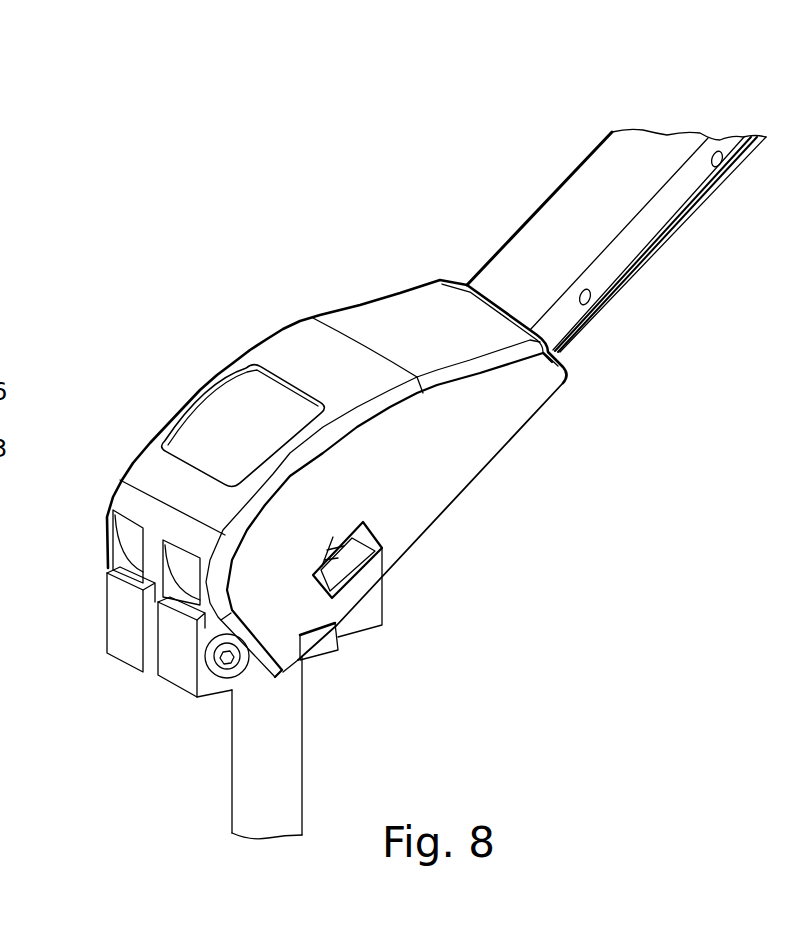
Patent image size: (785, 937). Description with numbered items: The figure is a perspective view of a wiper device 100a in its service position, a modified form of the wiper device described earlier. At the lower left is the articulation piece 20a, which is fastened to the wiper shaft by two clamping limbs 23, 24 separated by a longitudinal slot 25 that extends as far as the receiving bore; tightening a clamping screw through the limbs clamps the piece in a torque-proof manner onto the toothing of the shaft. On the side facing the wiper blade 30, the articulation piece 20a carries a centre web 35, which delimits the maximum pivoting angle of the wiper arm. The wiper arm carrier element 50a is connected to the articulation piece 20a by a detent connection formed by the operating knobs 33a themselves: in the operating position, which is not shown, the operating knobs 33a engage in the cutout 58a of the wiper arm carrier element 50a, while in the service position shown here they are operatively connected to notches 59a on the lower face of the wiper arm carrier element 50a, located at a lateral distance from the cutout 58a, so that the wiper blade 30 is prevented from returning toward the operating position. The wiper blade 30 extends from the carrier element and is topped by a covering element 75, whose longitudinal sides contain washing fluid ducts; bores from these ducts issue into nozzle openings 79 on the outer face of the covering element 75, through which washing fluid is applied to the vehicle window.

The wiper blade 30 is at (588, 131).
The covering element 75 is at (527, 247).
The nozzle openings 79 is at (722, 166).
The wiper arm carrier element 50a is at (304, 314).
The centre web 35 is at (150, 555).
The articulation piece 20a is at (84, 606).
The clamping limb 24 is at (117, 643).
The longitudinal slot 25 is at (152, 645).
The clamping limb 23 is at (173, 678).
The cutout 58a is at (367, 553).
The operating knob 33a is at (320, 653).
The notch 59a is at (320, 645).
The wiper device 100a is at (503, 626).